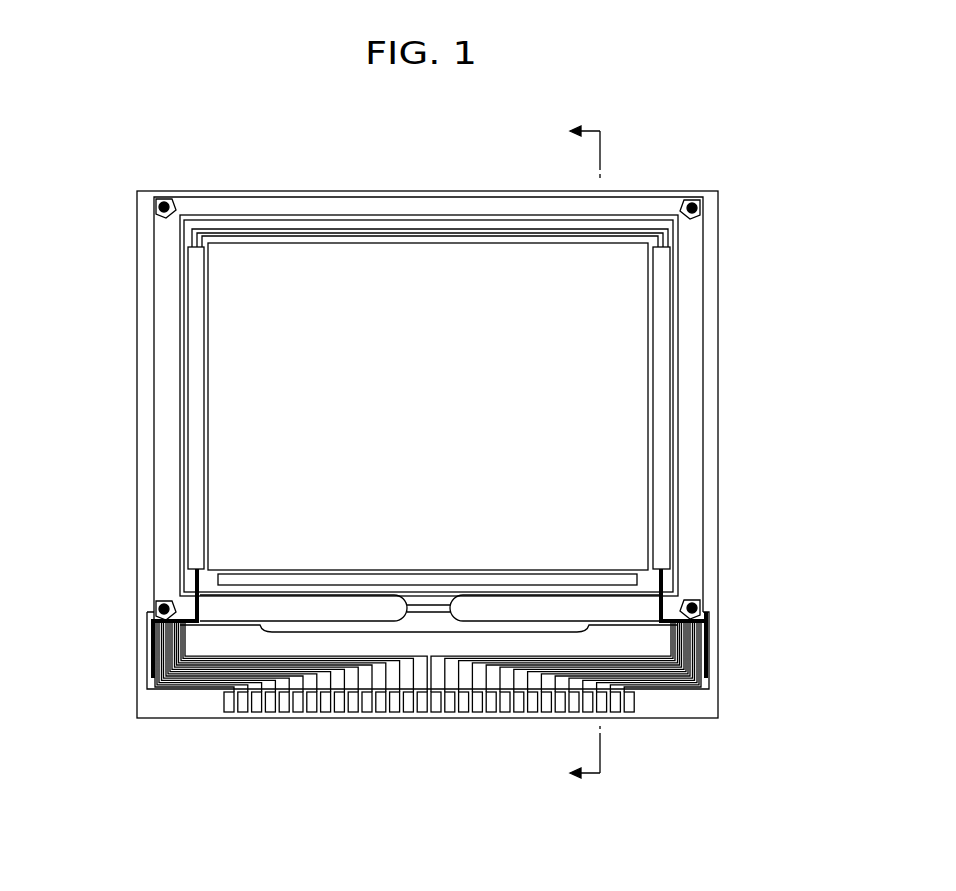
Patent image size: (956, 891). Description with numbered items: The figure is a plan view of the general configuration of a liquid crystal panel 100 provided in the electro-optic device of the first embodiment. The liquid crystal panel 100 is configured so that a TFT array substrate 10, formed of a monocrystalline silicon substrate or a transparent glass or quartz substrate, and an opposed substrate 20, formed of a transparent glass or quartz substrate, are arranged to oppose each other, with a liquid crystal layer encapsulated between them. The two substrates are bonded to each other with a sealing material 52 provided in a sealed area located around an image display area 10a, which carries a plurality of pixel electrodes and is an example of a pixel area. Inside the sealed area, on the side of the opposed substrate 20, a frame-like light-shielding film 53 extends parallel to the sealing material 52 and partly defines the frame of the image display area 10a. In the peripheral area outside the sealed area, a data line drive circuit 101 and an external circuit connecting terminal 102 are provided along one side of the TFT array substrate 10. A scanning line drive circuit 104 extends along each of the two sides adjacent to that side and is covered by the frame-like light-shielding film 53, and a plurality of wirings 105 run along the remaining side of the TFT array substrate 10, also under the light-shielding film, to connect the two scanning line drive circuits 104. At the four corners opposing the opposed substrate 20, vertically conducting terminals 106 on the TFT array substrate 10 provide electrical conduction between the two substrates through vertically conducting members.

The liquid crystal panel 100 is at (668, 128).
The TFT array substrate 10 is at (258, 194).
The image display area 10a is at (250, 360).
The opposed substrate 20 is at (450, 196).
The sealing material 52 is at (692, 340).
The frame-like light-shielding film 53 is at (657, 578).
The data line drive circuit 101 is at (207, 645).
The external circuit connecting terminal 102 is at (393, 700).
The scanning line drive circuit 104 is at (665, 405).
The wirings 105 is at (356, 236).
The vertically conducting terminals 106 is at (194, 198).